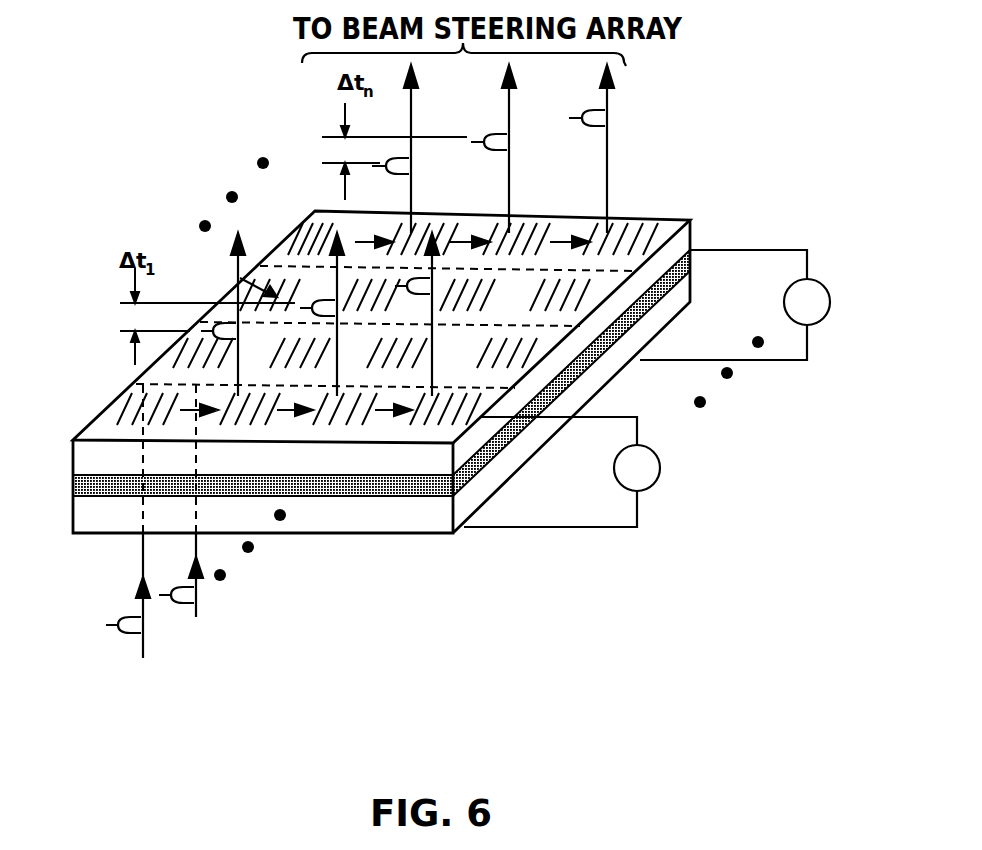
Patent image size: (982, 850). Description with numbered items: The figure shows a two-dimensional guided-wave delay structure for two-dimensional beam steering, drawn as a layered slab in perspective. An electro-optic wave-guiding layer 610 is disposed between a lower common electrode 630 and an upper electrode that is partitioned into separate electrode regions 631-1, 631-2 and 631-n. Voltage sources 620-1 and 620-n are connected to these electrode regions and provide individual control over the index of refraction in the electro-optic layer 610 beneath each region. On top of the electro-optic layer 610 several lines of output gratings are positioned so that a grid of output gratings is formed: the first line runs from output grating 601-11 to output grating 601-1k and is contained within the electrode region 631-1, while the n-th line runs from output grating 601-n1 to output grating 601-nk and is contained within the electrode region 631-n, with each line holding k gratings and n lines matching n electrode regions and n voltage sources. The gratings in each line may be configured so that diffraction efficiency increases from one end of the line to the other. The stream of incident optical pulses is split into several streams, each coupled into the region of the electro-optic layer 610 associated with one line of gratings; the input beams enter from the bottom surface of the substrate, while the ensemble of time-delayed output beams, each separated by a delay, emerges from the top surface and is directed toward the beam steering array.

The electro-optic wave-guiding layer 610 is at (390, 500).
The lower common electrode 630 is at (313, 520).
The electrode region 631-1 is at (103, 426).
The electrode region 631-2 is at (553, 340).
The electrode region 631-n is at (672, 223).
The output grating 601-11 is at (147, 394).
The output grating 601-1k is at (455, 416).
The output grating 601-n1 is at (327, 224).
The output grating 601-nk is at (633, 216).
The voltage source 620-1 is at (661, 470).
The voltage source 620-n is at (815, 280).